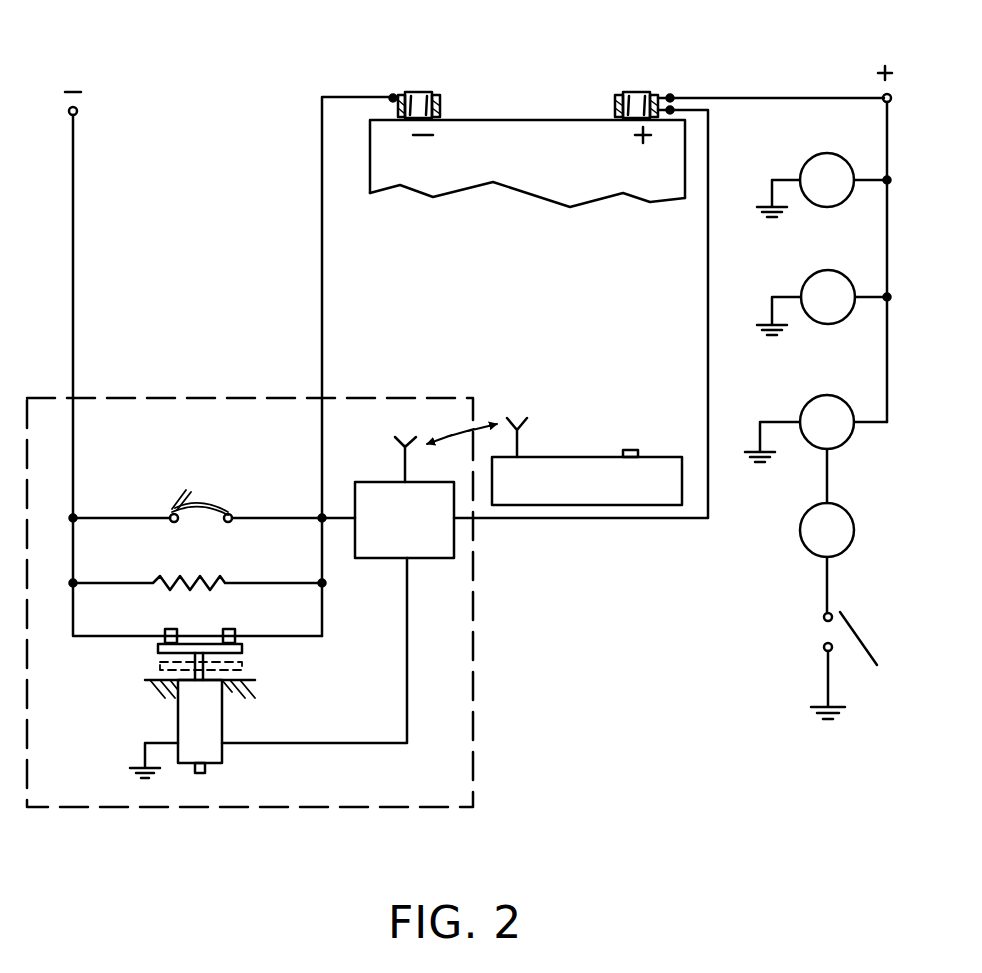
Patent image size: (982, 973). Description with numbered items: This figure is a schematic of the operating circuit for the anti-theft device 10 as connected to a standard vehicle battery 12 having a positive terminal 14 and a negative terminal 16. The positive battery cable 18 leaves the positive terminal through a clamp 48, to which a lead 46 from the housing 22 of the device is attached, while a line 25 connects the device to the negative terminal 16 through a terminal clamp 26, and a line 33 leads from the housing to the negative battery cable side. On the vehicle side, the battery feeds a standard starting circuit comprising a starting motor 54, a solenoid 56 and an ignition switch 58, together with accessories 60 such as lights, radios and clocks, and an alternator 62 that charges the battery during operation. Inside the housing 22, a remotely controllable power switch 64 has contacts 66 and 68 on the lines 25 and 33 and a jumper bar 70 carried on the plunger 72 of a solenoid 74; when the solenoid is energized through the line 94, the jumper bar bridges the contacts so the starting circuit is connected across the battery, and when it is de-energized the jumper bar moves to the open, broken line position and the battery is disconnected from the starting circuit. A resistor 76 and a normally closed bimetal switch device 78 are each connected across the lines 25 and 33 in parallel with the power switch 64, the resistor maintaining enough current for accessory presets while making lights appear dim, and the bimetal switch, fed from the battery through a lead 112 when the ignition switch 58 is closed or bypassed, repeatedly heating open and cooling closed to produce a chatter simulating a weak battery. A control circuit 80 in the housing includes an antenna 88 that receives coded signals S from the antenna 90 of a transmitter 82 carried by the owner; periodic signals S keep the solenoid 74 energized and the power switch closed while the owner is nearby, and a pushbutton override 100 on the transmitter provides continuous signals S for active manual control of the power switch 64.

The anti-theft device 10 is at (562, 668).
The vehicle battery 12 is at (505, 188).
The positive terminal 14 is at (643, 96).
The negative terminal 16 is at (417, 92).
The positive battery cable 18 is at (767, 96).
The housing 22 is at (319, 810).
The line 25 is at (320, 253).
The terminal clamp 26 is at (443, 100).
The line 33 is at (73, 270).
The lead 46 is at (707, 273).
The clamp 48 is at (617, 93).
The starting motor 54 is at (813, 403).
The solenoid 56 is at (808, 549).
The ignition switch 58 is at (854, 665).
The accessories 60 is at (836, 315).
The alternator 62 is at (813, 157).
The power switch 64 is at (140, 668).
The contact 66 is at (234, 630).
The contact 68 is at (166, 630).
The jumper bar 70 is at (241, 649).
The plunger 72 is at (224, 688).
The solenoid 74 is at (187, 718).
The resistor 76 is at (201, 574).
The bimetal switch device 78 is at (197, 504).
The control circuit 80 is at (459, 560).
The transmitter 82 is at (581, 453).
The antenna 88 is at (403, 436).
The antenna 90 is at (522, 424).
The line 94 is at (409, 699).
The pushbutton override 100 is at (633, 449).
The lead 112 is at (338, 520).
The signals S is at (484, 424).